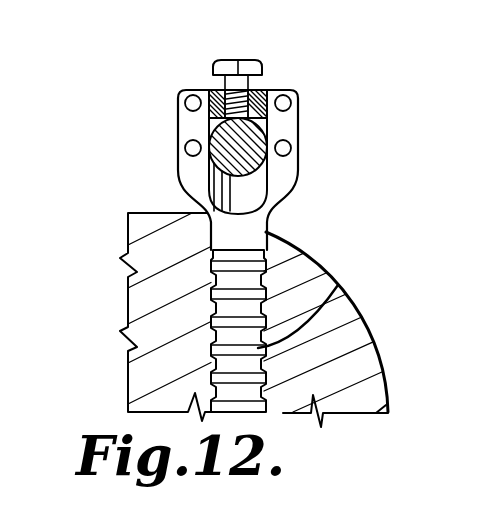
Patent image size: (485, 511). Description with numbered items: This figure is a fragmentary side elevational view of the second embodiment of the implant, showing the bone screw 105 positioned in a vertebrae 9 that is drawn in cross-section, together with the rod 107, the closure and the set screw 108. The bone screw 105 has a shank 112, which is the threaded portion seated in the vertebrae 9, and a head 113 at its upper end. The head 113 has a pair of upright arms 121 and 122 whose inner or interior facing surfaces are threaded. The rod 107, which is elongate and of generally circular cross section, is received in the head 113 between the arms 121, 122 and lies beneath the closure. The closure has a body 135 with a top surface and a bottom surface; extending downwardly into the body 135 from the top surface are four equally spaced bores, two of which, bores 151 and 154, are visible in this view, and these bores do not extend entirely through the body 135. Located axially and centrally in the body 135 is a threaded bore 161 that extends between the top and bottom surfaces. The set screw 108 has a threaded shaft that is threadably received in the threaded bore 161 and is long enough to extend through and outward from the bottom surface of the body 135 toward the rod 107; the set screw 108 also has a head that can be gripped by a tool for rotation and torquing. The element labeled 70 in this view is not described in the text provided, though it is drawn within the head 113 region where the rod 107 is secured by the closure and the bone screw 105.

The set screw 108 is at (258, 60).
The bore 151 is at (246, 122).
The bore 154 is at (221, 126).
The body 135 is at (298, 115).
The ball 70 is at (256, 122).
The threaded bore 161 is at (222, 114).
The upright arm 121 is at (181, 156).
The head 113 is at (182, 187).
The upright arm 122 is at (298, 172).
The rod 107 is at (236, 168).
The bone screw 105 is at (342, 290).
The vertebrae 9 is at (383, 362).
The shank 112 is at (257, 388).